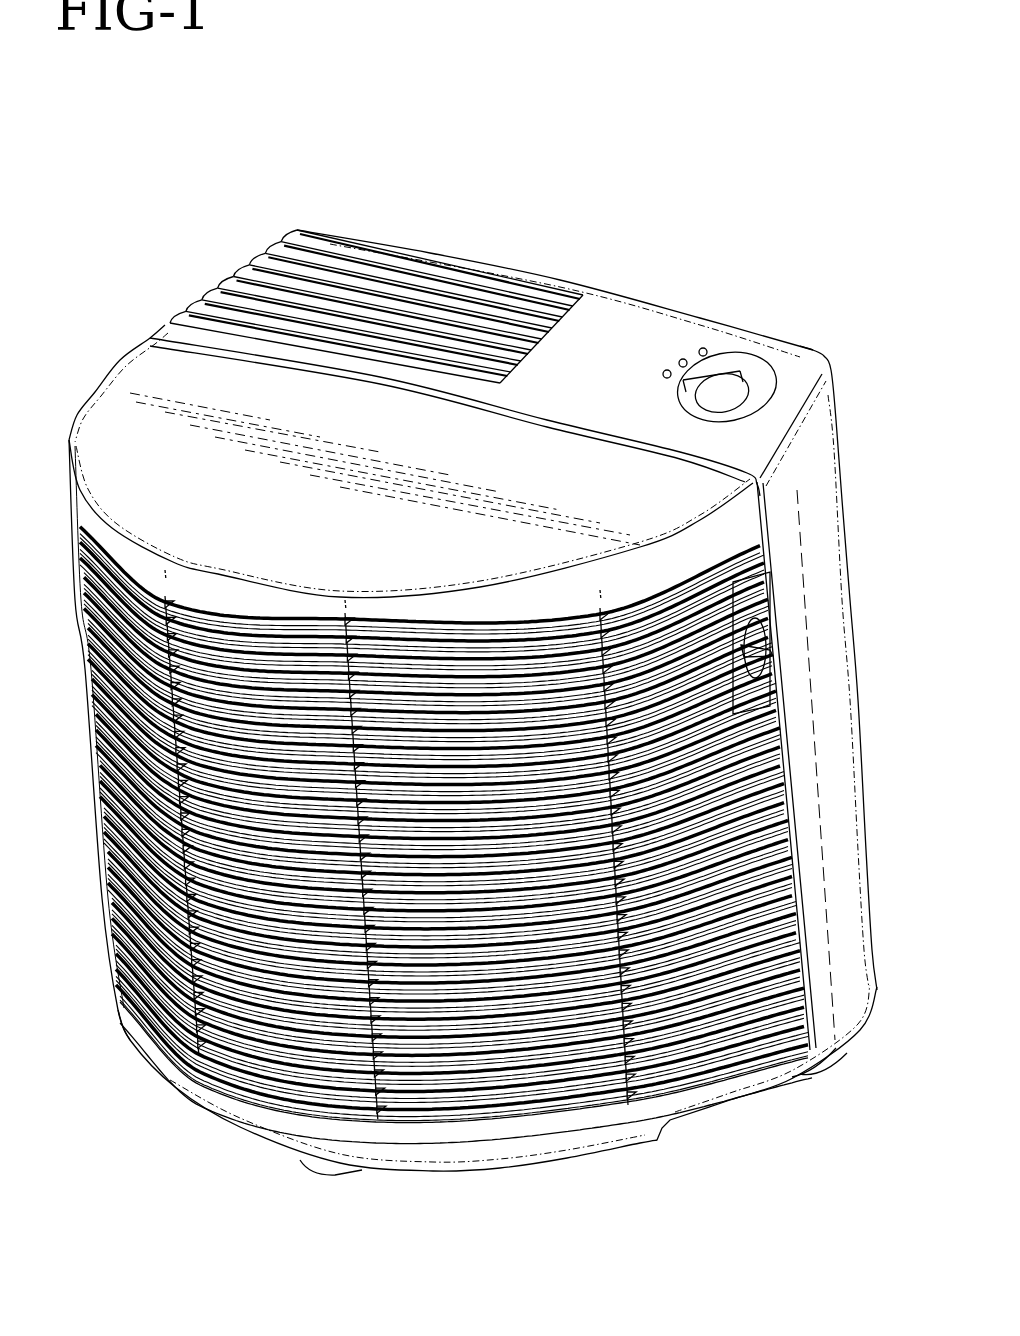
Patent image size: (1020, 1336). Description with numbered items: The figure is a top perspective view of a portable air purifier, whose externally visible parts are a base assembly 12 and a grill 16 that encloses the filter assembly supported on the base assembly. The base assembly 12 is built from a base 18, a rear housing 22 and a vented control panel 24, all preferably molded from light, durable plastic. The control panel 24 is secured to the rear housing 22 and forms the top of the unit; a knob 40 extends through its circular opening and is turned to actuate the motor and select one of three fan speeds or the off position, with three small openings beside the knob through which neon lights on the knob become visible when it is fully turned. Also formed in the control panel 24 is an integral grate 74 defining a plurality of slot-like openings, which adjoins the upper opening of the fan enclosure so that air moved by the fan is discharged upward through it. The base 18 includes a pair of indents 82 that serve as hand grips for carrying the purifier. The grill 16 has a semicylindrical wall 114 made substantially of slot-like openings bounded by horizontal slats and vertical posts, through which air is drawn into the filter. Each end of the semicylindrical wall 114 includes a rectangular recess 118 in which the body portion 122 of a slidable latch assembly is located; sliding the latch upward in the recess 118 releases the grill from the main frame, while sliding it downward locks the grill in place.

The base assembly 12 is at (416, 1180).
The grill 16 is at (112, 356).
The base 18 is at (573, 1165).
The rear housing 22 is at (832, 797).
The vented control panel 24 is at (612, 303).
The knob 40 is at (735, 362).
The grate 74 is at (398, 272).
The indents 82 is at (742, 1100).
The semicylindrical wall 114 is at (100, 890).
The rectangular recess 118 is at (745, 582).
The body portion 122 is at (766, 690).